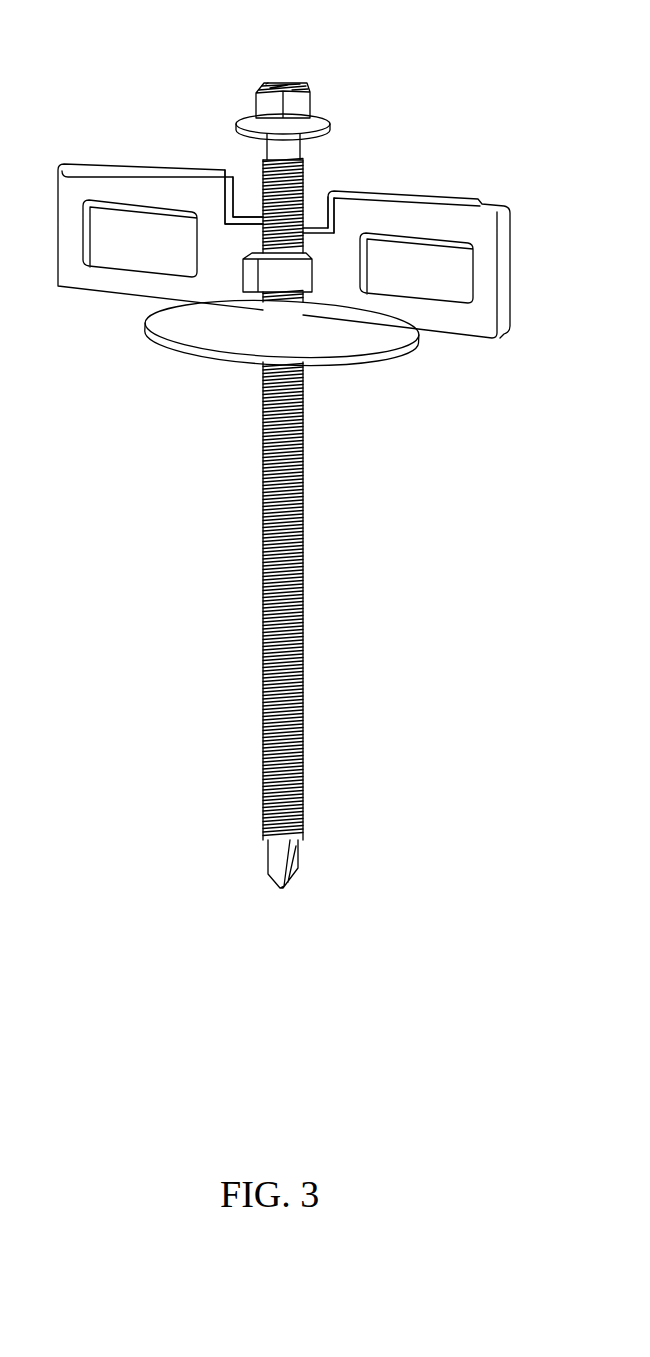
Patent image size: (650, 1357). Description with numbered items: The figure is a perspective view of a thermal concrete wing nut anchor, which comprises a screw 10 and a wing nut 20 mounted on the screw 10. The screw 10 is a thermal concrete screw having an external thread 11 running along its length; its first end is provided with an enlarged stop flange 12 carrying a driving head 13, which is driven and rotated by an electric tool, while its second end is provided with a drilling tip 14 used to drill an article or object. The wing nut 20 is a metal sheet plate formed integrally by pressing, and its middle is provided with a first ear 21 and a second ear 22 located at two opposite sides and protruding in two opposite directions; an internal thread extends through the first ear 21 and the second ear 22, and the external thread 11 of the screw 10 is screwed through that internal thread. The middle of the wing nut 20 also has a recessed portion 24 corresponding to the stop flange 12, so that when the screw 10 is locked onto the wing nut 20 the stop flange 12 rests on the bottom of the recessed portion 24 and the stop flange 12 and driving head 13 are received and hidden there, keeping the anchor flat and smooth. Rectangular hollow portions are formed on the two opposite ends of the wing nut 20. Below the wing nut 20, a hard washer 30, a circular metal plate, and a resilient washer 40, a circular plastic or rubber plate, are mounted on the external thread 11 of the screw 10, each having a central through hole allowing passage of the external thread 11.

The screw 10 is at (289, 54).
The external thread 11 is at (264, 563).
The stop flange 12 is at (331, 120).
The driving head 13 is at (252, 105).
The drilling tip 14 is at (268, 862).
The wing nut 20 is at (433, 177).
The first ear 21 is at (251, 281).
The second ear 22 is at (305, 225).
The recessed portion 24 is at (253, 183).
The hard washer 30 is at (190, 335).
The resilient washer 40 is at (345, 356).